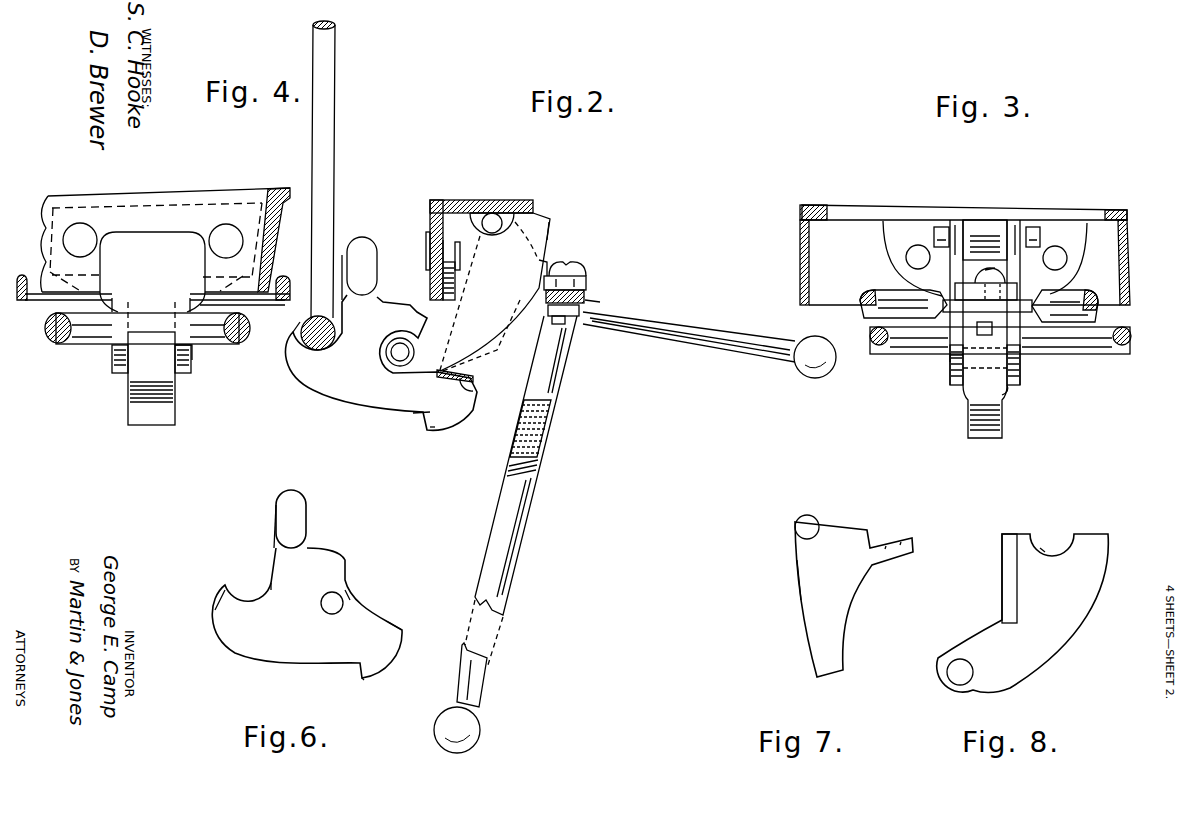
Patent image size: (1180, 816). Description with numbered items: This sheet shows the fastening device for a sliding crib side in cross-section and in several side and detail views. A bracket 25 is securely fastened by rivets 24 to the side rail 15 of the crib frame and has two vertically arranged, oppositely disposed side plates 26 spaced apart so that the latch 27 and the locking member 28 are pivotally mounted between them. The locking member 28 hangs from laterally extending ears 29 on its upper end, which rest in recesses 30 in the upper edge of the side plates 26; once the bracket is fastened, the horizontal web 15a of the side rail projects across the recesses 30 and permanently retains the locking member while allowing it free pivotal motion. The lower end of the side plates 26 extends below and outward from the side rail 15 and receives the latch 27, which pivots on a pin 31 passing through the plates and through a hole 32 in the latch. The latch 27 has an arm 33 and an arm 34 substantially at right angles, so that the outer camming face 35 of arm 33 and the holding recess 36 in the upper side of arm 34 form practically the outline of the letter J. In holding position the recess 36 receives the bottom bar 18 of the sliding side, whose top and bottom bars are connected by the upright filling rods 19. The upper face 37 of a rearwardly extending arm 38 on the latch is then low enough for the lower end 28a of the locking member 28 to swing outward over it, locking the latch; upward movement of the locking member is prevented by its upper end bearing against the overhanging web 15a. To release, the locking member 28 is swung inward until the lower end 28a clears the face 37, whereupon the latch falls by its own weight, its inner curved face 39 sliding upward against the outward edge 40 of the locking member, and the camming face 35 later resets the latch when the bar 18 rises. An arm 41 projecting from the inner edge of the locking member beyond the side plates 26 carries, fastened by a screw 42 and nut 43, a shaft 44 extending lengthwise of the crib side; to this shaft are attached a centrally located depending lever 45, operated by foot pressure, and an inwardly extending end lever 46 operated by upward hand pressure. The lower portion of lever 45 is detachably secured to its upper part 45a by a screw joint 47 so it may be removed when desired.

In FIG. 4, the side rail 15 is at (170, 193).
In FIG. 2, the side rail 15 is at (430, 220).
In FIG. 3, the side rail 15 is at (965, 255).
In FIG. 2, the horizontal web 15a is at (524, 212).
In FIG. 3, the horizontal web 15a is at (830, 210).
In FIG. 4, the bottom bar 18 is at (80, 348).
In FIG. 2, the bottom bar 18 is at (314, 344).
In FIG. 3, the bottom bar 18 is at (893, 343).
In FIG. 2, the upright filling rods 19 is at (330, 156).
In FIG. 4, the rivets 24 is at (153, 240).
In FIG. 2, the rivets 24 is at (428, 252).
In FIG. 3, the rivets 24 is at (918, 245).
In FIG. 4, the bracket 25 is at (115, 310).
In FIG. 2, the bracket 25 is at (550, 227).
In FIG. 3, the bracket 25 is at (1060, 234).
In FIG. 8, the bracket 25 is at (1092, 613).
In FIG. 4, the side plates 26 is at (118, 372).
In FIG. 2, the side plates 26 is at (482, 273).
In FIG. 3, the side plates 26 is at (1017, 257).
In FIG. 8, the side plates 26 is at (1011, 628).
In FIG. 4, the latch 27 is at (151, 355).
In FIG. 2, the latch 27 is at (381, 362).
In FIG. 3, the latch 27 is at (985, 421).
In FIG. 6, the latch 27 is at (307, 613).
In FIG. 2, the locking member 28 is at (553, 262).
In FIG. 3, the locking member 28 is at (985, 237).
In FIG. 7, the locking member 28 is at (854, 599).
In FIG. 2, the lower end of locking member 28a is at (474, 368).
In FIG. 3, the lower end of locking member 28a is at (1020, 380).
In FIG. 2, the laterally extending ears 29 is at (493, 220).
In FIG. 3, the laterally extending ears 29 is at (940, 225).
In FIG. 7, the laterally extending ears 29 is at (812, 518).
In FIG. 2, the recesses 30 is at (551, 228).
In FIG. 8, the recesses 30 is at (1046, 546).
In FIG. 4, the pin 31 is at (195, 358).
In FIG. 2, the pin 31 is at (399, 366).
In FIG. 3, the pin 31 is at (972, 350).
In FIG. 6, the hole 32 is at (341, 600).
In FIG. 2, the arm 33 is at (362, 266).
In FIG. 6, the arm 33 is at (292, 527).
In FIG. 4, the arm 34 is at (168, 392).
In FIG. 2, the arm 34 is at (291, 344).
In FIG. 6, the arm 34 is at (232, 610).
In FIG. 4, the camming face 35 is at (166, 290).
In FIG. 2, the camming face 35 is at (343, 262).
In FIG. 6, the camming face 35 is at (274, 519).
In FIG. 6, the holding recess 36 is at (247, 597).
In FIG. 2, the upper face 37 is at (467, 390).
In FIG. 3, the upper face 37 is at (1004, 392).
In FIG. 6, the upper face 37 is at (400, 622).
In FIG. 2, the rearwardly extending arm 38 is at (431, 399).
In FIG. 3, the rearwardly extending arm 38 is at (990, 412).
In FIG. 6, the rearwardly extending arm 38 is at (366, 622).
In FIG. 2, the inner curved face 39 is at (460, 420).
In FIG. 6, the inner curved face 39 is at (398, 660).
In FIG. 7, the outward edge 40 is at (798, 592).
In FIG. 2, the arm 41 is at (590, 284).
In FIG. 3, the arm 41 is at (1012, 292).
In FIG. 2, the screw 42 is at (580, 273).
In FIG. 3, the screw 42 is at (1000, 275).
In FIG. 2, the nut 43 is at (576, 318).
In FIG. 3, the nut 43 is at (976, 322).
In FIG. 4, the shaft 44 is at (33, 303).
In FIG. 2, the shaft 44 is at (587, 300).
In FIG. 3, the shaft 44 is at (1100, 312).
In FIG. 2, the depending lever 45 is at (528, 514).
In FIG. 2, the upper part of lever 45a is at (566, 380).
In FIG. 2, the end lever 46 is at (709, 345).
In FIG. 2, the screw joint 47 is at (536, 437).